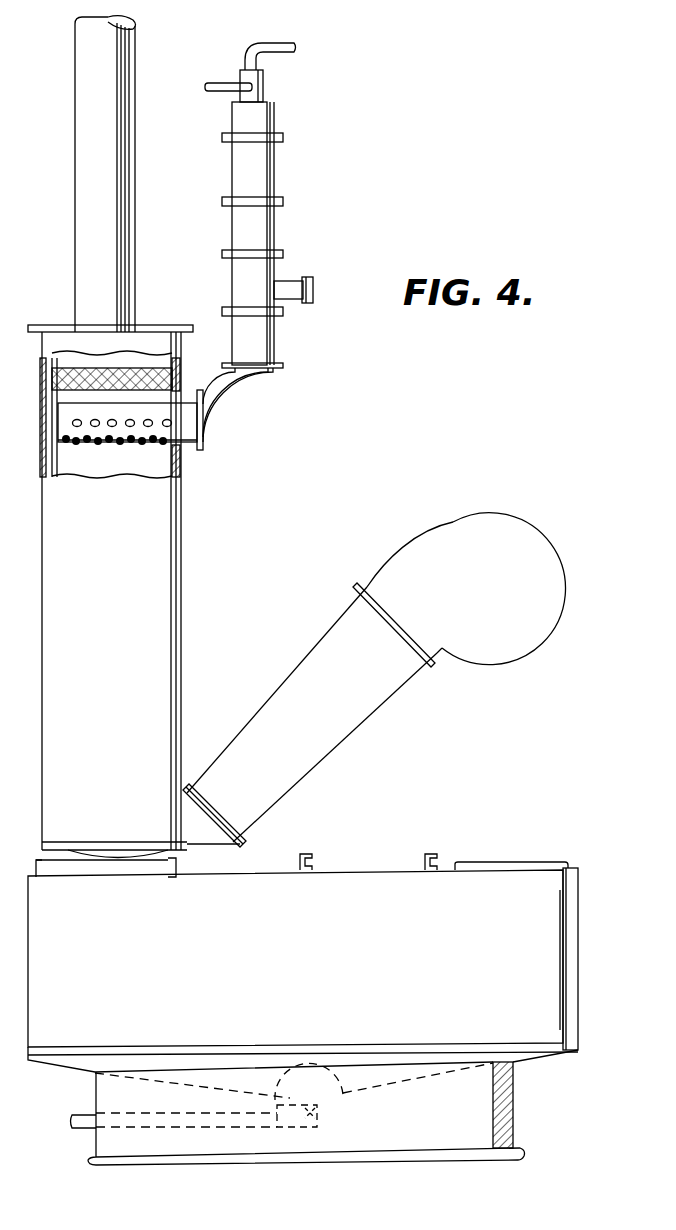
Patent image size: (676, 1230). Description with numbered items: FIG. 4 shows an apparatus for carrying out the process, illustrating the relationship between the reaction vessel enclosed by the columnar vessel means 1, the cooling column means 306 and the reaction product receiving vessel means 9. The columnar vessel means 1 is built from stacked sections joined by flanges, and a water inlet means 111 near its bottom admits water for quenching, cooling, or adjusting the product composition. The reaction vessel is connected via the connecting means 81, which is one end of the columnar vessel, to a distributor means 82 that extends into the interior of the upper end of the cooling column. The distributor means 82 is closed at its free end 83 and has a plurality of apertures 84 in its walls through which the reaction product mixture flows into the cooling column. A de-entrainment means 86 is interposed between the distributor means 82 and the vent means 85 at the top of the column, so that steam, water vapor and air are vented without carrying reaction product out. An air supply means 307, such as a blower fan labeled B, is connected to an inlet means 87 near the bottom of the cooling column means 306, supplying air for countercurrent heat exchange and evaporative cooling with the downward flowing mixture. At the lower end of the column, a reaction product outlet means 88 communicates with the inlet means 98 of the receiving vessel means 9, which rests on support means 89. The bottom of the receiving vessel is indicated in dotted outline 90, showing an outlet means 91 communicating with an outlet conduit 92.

The columnar vessel means 1 is at (272, 172).
The water inlet means 111 is at (287, 283).
The vent means 85 is at (93, 230).
The de-entrainment means 86 is at (50, 386).
The free end 83 is at (40, 438).
The distributor means 82 is at (160, 410).
The apertures 84 is at (145, 443).
The connecting means 81 is at (245, 405).
The cooling column means 306 is at (181, 543).
The air supply means 307 is at (452, 516).
The blower designation B is at (475, 573).
The inlet means 87 is at (205, 827).
The inlet means 98 is at (38, 860).
The reaction product outlet means 88 is at (108, 855).
The reaction product receiving vessel means 9 is at (303, 952).
The support means 89 is at (303, 1106).
The dotted outline 90 is at (309, 1081).
The outlet means 91 is at (318, 1115).
The outlet conduit 92 is at (86, 1126).